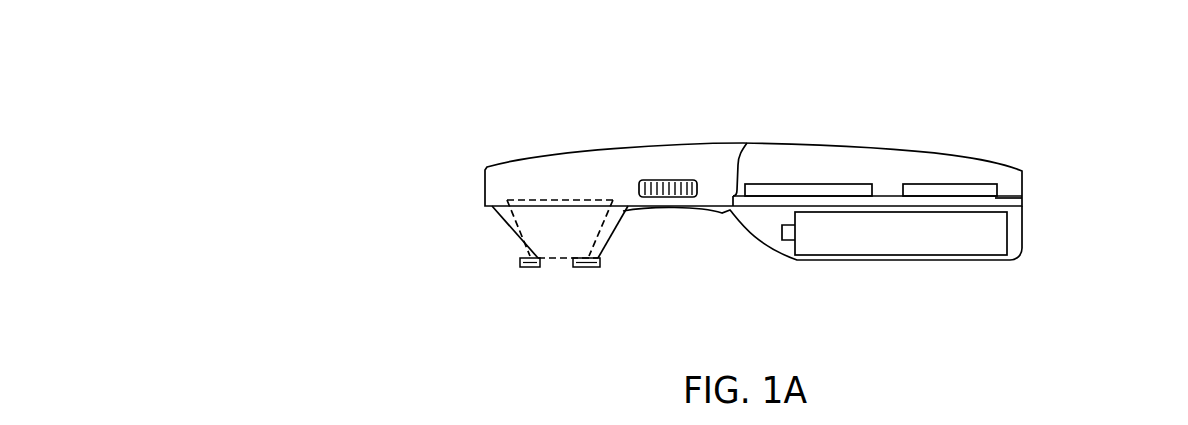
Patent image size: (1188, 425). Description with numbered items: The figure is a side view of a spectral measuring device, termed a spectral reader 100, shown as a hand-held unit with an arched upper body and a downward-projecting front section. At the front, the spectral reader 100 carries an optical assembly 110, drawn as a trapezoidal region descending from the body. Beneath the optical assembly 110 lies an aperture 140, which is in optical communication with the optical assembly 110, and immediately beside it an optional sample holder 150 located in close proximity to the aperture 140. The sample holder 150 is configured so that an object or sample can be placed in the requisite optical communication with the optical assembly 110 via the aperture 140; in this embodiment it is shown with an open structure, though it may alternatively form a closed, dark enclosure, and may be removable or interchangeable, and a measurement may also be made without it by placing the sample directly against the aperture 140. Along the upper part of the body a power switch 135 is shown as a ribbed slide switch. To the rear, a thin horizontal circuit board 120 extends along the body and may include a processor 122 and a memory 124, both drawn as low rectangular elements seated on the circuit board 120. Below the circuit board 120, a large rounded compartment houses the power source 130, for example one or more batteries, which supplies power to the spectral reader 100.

The spectral reader 100 is at (305, 95).
The optical assembly 110 is at (550, 230).
The circuit board 120 is at (1022, 198).
The processor 122 is at (810, 190).
The memory 124 is at (955, 190).
The power source 130 is at (933, 230).
The power switch 135 is at (678, 180).
The aperture 140 is at (562, 258).
The sample holder 150 is at (587, 267).